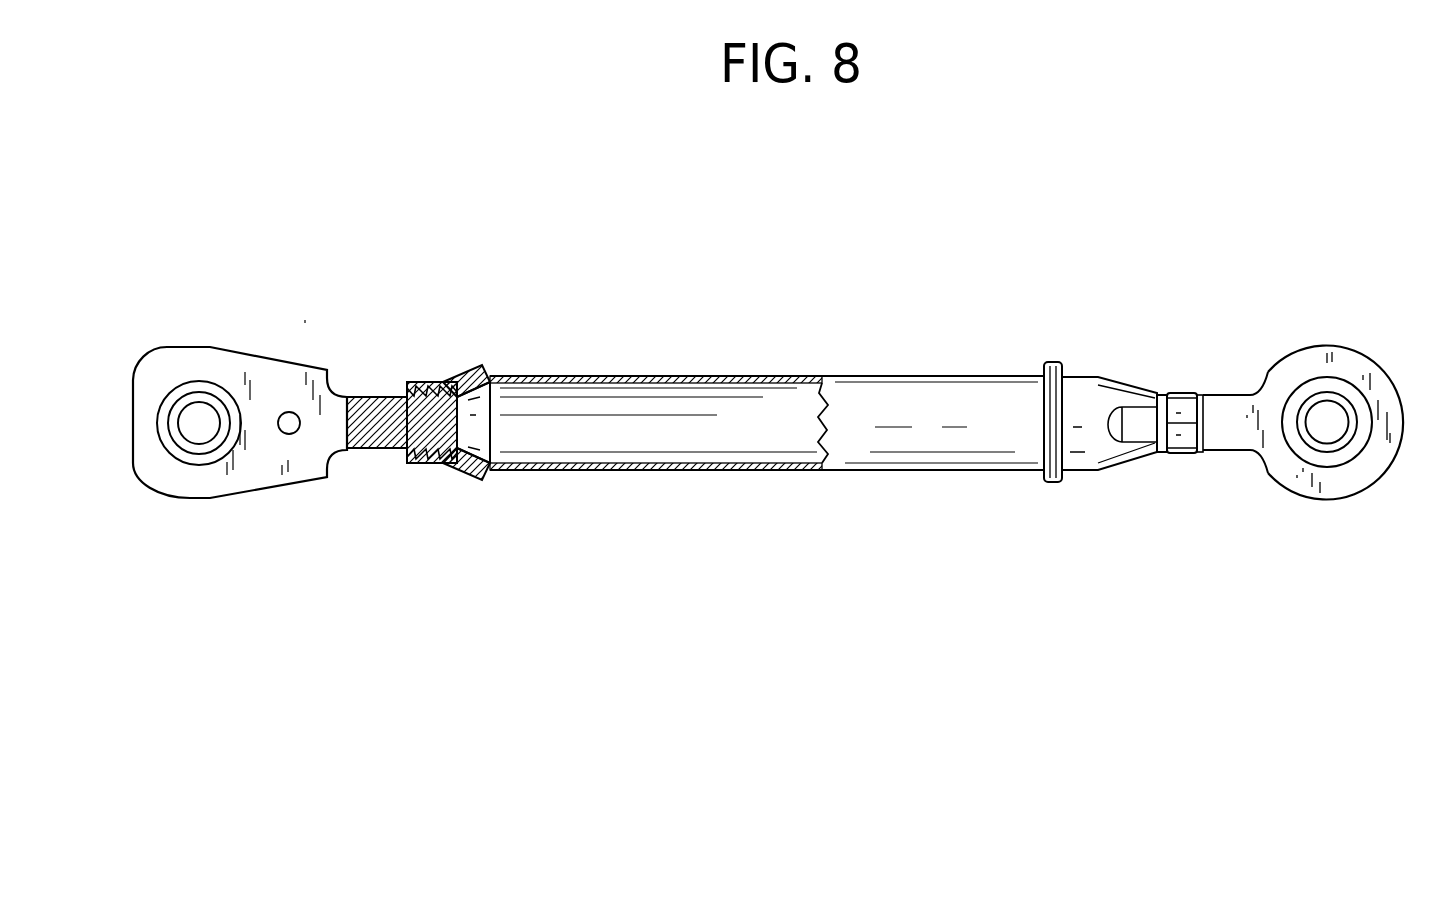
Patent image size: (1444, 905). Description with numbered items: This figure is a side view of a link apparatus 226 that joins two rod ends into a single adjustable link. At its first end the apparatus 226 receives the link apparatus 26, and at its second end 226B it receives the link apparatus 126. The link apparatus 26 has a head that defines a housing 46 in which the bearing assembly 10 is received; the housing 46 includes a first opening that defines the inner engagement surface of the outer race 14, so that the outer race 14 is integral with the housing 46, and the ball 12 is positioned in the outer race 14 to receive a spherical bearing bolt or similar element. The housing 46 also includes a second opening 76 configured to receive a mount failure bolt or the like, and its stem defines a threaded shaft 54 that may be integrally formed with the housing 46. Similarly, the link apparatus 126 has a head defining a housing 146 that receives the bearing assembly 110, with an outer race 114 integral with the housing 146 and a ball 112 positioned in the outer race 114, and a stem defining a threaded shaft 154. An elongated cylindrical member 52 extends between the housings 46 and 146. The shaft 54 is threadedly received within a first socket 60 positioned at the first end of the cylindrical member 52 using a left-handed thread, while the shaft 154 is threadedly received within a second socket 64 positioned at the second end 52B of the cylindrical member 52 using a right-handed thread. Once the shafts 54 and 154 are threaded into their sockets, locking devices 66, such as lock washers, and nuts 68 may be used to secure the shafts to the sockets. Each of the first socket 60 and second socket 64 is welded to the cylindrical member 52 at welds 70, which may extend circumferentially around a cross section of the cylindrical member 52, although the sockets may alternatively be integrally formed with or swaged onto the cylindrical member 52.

The link apparatus 226 is at (816, 201).
The second end 226B is at (1240, 281).
The link apparatus 26 is at (225, 516).
The housing 46 is at (148, 366).
The bearing assembly 10 is at (198, 368).
The outer race 14 is at (212, 383).
The ball 12 is at (220, 422).
The second opening 76 is at (291, 434).
The threaded shaft 54 is at (372, 452).
The first socket 60 is at (443, 378).
The weld 70 is at (498, 358).
The cylindrical member 52 is at (870, 375).
The second end of the cylindrical member 52B is at (1064, 498).
The second socket 64 is at (1093, 376).
The locking device 66 is at (1158, 455).
The nut 68 is at (1182, 392).
The threaded shaft 154 is at (1253, 452).
The housing 146 is at (1370, 490).
The link apparatus 126 is at (1357, 337).
The bearing assembly 110 is at (1308, 366).
The outer race 114 is at (1363, 430).
The ball 112 is at (1337, 449).